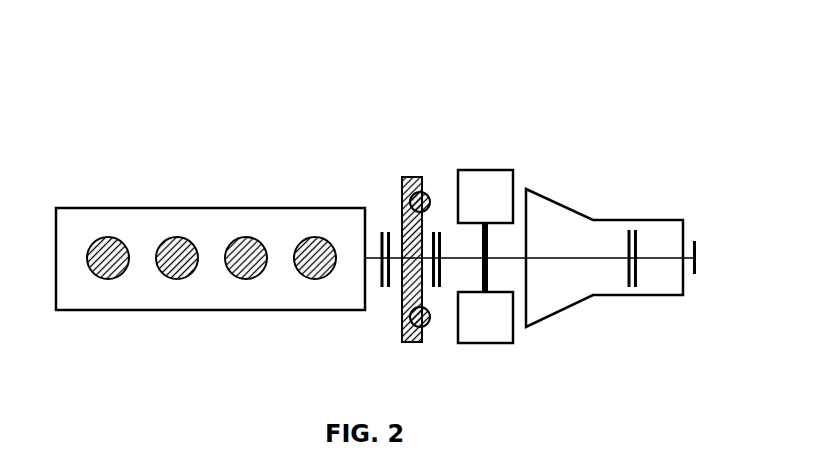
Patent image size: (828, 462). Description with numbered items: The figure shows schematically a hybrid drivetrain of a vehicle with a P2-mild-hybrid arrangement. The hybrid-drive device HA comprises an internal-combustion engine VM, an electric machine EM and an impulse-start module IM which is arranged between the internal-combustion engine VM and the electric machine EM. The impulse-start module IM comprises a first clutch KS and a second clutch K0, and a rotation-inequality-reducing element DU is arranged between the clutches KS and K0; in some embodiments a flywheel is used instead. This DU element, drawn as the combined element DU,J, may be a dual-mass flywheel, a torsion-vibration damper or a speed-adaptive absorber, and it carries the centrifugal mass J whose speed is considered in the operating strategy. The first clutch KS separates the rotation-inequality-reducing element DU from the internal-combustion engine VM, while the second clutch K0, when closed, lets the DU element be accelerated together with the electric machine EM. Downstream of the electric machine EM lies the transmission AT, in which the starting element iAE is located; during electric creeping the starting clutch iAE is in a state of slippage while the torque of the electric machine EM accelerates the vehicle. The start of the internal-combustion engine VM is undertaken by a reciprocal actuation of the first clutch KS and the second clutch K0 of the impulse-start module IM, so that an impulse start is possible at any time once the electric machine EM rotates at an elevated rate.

The internal-combustion engine VM is at (210, 259).
The first clutch KS is at (383, 289).
The rotation-inequality-reducing element with centrifugal mass DU,J is at (411, 213).
The rotation-inequality-reducing element DU is at (411, 213).
The centrifugal mass J is at (415, 175).
The second clutch K0 is at (438, 289).
The electric machine EM is at (485, 256).
The transmission AT is at (604, 241).
The starting clutch within the transmission iAE is at (630, 221).
The impulse-start module IM is at (369, 179).
The hybrid-drive device HA is at (486, 104).